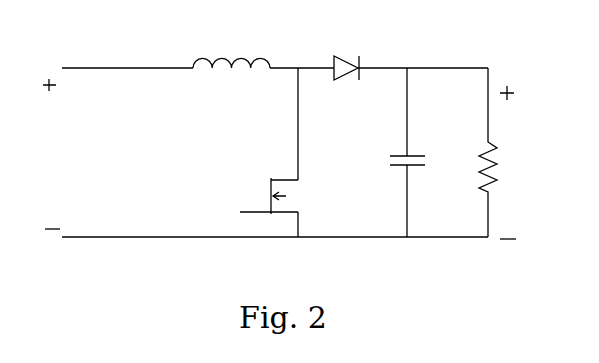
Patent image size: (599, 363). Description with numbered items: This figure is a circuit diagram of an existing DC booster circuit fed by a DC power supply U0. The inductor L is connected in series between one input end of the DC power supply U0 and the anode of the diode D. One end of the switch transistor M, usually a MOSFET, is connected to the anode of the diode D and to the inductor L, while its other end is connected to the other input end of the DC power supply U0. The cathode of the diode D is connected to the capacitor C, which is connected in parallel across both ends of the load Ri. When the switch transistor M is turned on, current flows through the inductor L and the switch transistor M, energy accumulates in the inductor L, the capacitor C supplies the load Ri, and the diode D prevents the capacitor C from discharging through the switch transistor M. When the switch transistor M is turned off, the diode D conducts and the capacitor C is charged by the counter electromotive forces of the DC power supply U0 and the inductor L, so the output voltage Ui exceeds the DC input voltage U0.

The inductor L is at (231, 51).
The diode D is at (346, 58).
The switch transistor M is at (269, 207).
The capacitor C is at (395, 152).
The load Ri is at (478, 152).
The DC power supply U0 is at (53, 164).
The output voltage Ui is at (512, 175).